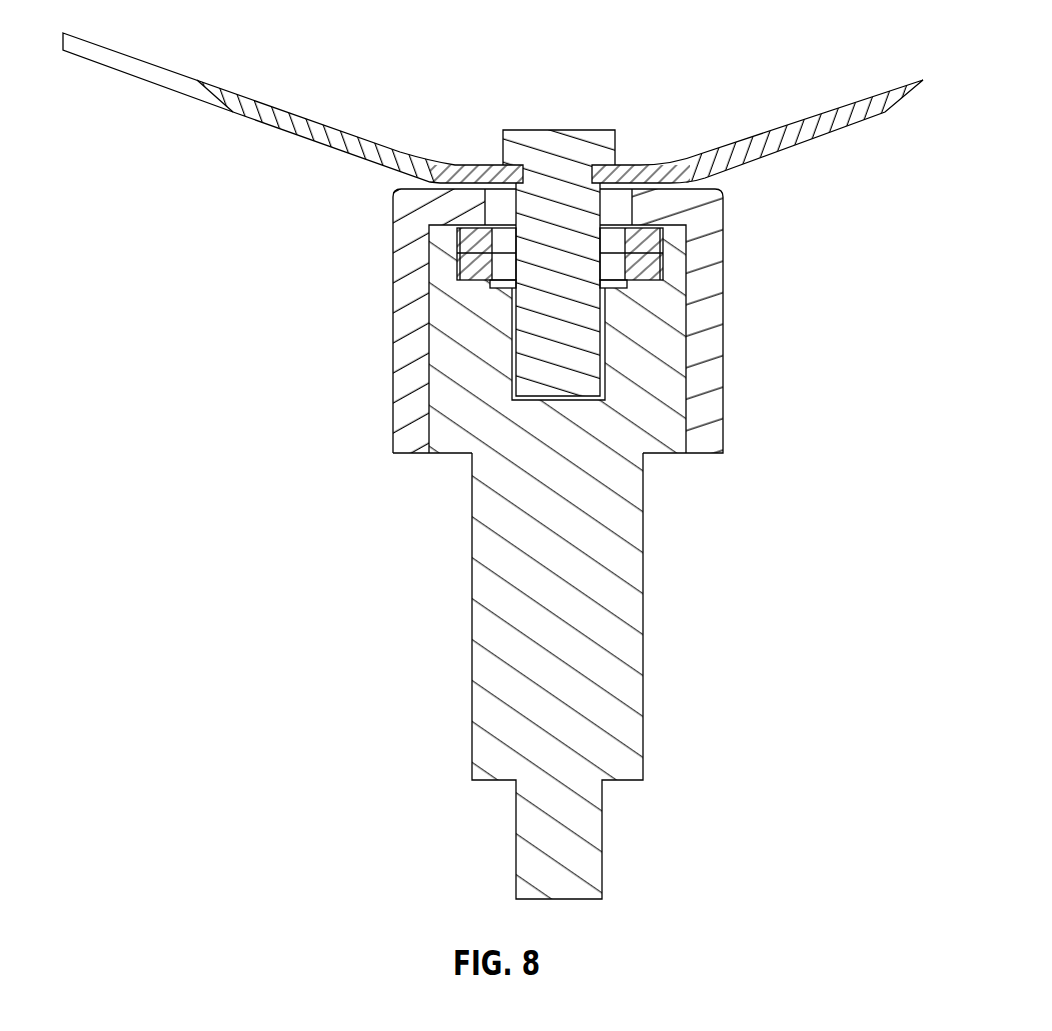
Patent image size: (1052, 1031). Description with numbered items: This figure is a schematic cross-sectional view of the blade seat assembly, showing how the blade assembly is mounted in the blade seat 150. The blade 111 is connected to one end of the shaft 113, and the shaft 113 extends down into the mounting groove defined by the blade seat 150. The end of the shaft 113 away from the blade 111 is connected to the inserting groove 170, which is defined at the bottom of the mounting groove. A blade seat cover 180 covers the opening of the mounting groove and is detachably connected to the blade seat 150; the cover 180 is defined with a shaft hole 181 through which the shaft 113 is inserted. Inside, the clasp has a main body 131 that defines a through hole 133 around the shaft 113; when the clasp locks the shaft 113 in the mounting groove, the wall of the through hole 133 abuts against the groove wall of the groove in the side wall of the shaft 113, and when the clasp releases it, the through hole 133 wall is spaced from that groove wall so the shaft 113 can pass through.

The blade 111 is at (769, 133).
The shaft 113 is at (577, 133).
The main body 131 is at (663, 273).
The through hole 133 is at (472, 286).
The blade seat 150 is at (598, 505).
The inserting groove 170 is at (482, 374).
The blade seat cover 180 is at (703, 387).
The shaft hole 181 is at (468, 209).